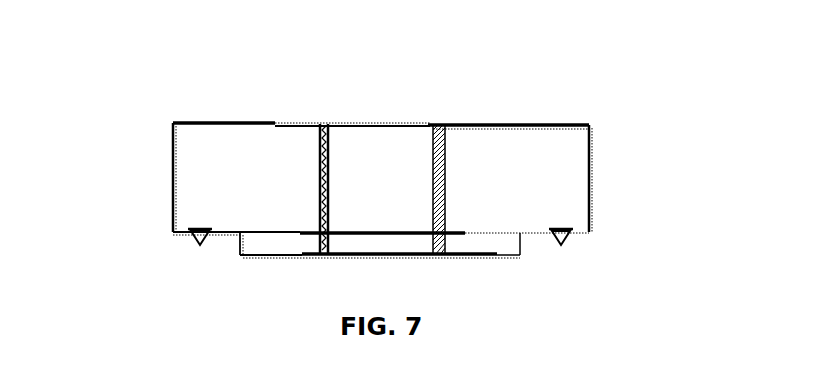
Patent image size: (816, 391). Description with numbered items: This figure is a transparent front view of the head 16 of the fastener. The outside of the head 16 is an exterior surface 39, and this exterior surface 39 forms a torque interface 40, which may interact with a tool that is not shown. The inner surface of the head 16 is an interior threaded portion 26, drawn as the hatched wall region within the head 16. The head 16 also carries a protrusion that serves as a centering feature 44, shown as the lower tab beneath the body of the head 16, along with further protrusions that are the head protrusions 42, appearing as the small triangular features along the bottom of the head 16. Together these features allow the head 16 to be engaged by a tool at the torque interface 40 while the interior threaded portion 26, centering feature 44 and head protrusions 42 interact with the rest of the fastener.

The head 16 is at (136, 95).
The interior threaded portion 26 is at (455, 139).
The exterior surface 39 is at (607, 184).
The torque interface 40 is at (511, 178).
The head protrusions 42 is at (572, 260).
The centering feature 44 is at (257, 260).